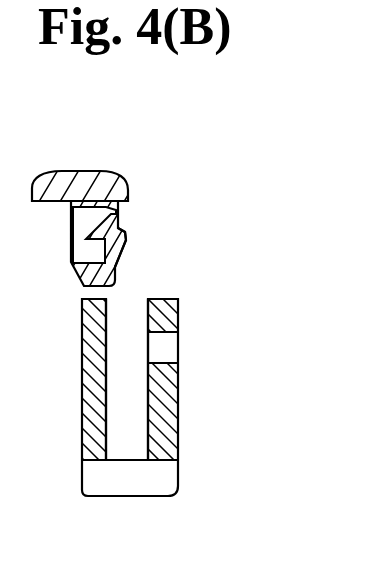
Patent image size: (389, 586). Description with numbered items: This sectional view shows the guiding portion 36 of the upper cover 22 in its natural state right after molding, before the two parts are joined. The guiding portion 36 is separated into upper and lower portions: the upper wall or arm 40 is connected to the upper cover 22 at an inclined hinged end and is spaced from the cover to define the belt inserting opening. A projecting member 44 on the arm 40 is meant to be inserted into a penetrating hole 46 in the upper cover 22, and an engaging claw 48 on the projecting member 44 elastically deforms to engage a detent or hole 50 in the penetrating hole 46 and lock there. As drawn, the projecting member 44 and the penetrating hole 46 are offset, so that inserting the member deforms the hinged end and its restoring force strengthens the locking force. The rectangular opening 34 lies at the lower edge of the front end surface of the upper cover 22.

The guiding portion 36 is at (158, 163).
The arm 40 is at (76, 183).
The projecting member 44 is at (72, 234).
The engaging claw 48 is at (118, 232).
The penetrating hole 46 is at (107, 327).
The detent hole 50 is at (178, 338).
The upper cover 22 is at (182, 497).
The rectangular opening 34 is at (110, 483).